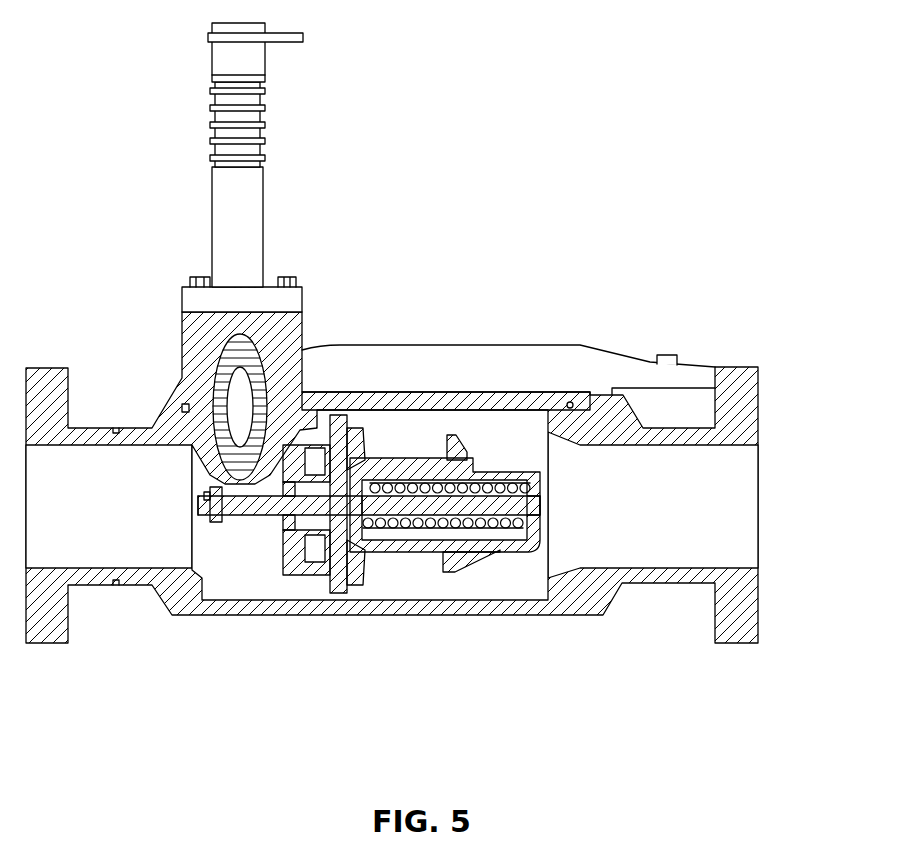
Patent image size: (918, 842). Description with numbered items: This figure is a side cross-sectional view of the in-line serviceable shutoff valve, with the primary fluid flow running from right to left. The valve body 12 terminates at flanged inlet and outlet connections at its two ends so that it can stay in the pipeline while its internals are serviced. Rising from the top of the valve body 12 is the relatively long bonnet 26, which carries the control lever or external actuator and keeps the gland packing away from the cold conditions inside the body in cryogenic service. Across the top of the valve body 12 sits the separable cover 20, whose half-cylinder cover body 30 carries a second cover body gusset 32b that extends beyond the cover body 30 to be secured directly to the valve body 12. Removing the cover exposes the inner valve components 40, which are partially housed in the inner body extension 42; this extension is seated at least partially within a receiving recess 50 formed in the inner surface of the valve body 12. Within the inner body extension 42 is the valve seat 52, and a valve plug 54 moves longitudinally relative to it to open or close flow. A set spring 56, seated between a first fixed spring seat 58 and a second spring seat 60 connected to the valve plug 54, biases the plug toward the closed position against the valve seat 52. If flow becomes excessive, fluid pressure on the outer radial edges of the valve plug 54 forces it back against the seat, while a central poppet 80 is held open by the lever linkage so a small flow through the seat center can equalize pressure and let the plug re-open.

The valve body 12 is at (587, 616).
The separable cover 20 is at (538, 345).
The bonnet 26 is at (212, 90).
The cover body 30 is at (437, 392).
The second cover body gusset 32b is at (612, 357).
The inner valve components 40 is at (506, 498).
The inner body extension 42 is at (223, 587).
The receiving recess 50 is at (480, 586).
The valve seat 52 is at (313, 590).
The valve plug 54 is at (363, 430).
The set spring 56 is at (523, 523).
The first fixed spring seat 58 is at (530, 485).
The second spring seat 60 is at (343, 428).
The central poppet 80 is at (335, 593).